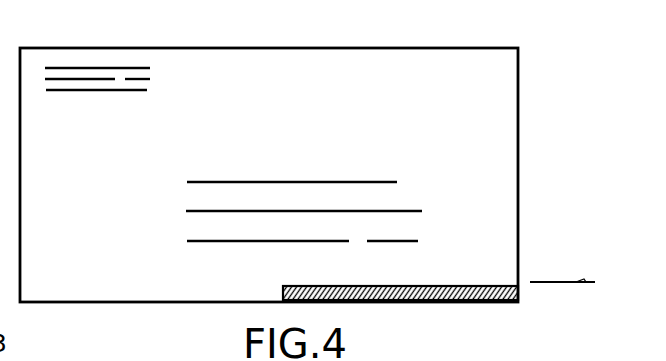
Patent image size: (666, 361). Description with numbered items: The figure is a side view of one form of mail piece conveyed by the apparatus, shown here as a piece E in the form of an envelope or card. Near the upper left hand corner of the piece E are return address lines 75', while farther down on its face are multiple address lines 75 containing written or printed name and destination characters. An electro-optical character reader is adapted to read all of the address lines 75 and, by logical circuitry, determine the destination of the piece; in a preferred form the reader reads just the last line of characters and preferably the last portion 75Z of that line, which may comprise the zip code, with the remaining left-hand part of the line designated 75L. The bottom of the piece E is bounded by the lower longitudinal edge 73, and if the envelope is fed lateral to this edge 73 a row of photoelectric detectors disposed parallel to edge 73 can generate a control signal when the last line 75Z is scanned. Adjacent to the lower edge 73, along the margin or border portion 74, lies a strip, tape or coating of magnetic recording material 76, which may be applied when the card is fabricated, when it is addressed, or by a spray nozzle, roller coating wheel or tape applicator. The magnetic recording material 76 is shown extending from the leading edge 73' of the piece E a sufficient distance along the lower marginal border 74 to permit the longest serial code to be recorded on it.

The piece E is at (430, 47).
The lower edge 73 is at (47, 332).
The leading edge 73' is at (547, 243).
The margin or border portion 74 is at (118, 293).
The address lines 75 is at (304, 172).
The return address lines 75' is at (97, 52).
The left portion of address line 75L is at (256, 244).
The last portion of last line 75Z is at (408, 240).
The magnetic recording material 76 is at (472, 302).